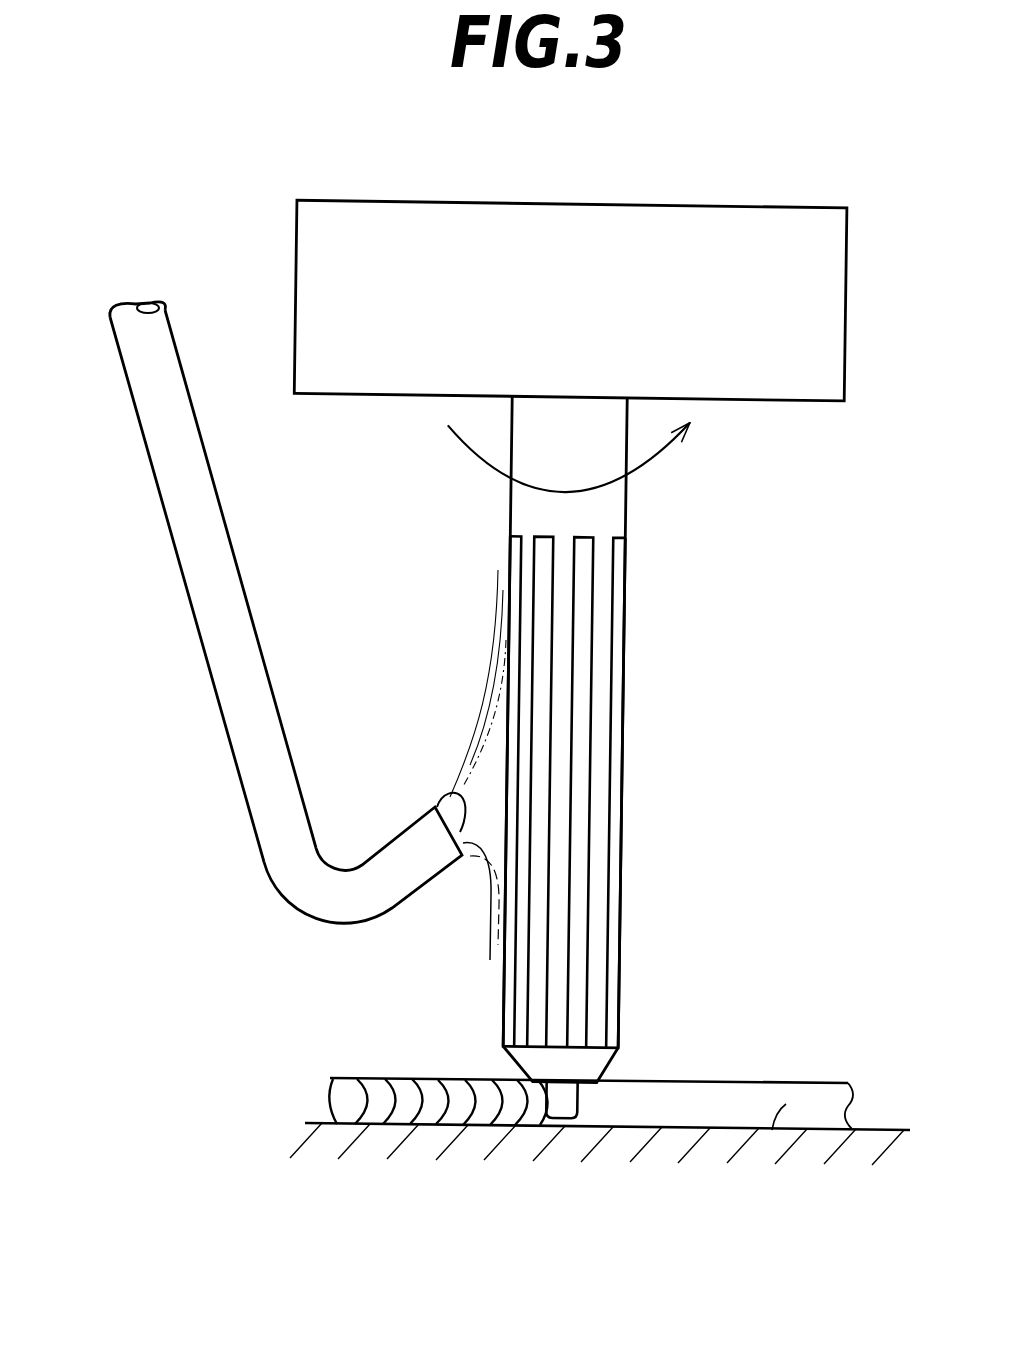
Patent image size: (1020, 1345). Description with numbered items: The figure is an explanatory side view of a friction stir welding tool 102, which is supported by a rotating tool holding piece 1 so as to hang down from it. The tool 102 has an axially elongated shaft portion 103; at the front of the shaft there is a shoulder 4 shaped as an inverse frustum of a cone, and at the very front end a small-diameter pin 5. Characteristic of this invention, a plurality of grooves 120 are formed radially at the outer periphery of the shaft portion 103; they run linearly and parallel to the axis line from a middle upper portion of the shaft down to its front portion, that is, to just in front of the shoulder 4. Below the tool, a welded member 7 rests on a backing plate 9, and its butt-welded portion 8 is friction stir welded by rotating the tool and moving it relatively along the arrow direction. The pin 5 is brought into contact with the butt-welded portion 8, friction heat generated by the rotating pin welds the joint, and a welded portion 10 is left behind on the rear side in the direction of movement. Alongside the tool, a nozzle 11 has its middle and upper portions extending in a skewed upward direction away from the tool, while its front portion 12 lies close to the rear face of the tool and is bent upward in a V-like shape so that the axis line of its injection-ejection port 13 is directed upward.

The rotating tool holding piece 1 is at (800, 190).
The tool 102 is at (625, 627).
The shaft portion 103 is at (622, 740).
The grooves 120 is at (560, 773).
The shoulder 4 is at (582, 1075).
The pin 5 is at (560, 1126).
The welded member 7 is at (792, 1085).
The butt-welded portion 8 is at (712, 1113).
The backing plate 9 is at (790, 1102).
The welded portion 10 is at (362, 1104).
The nozzle 11 is at (242, 725).
The front portion 12 is at (412, 880).
The injection-ejection port 13 is at (455, 810).